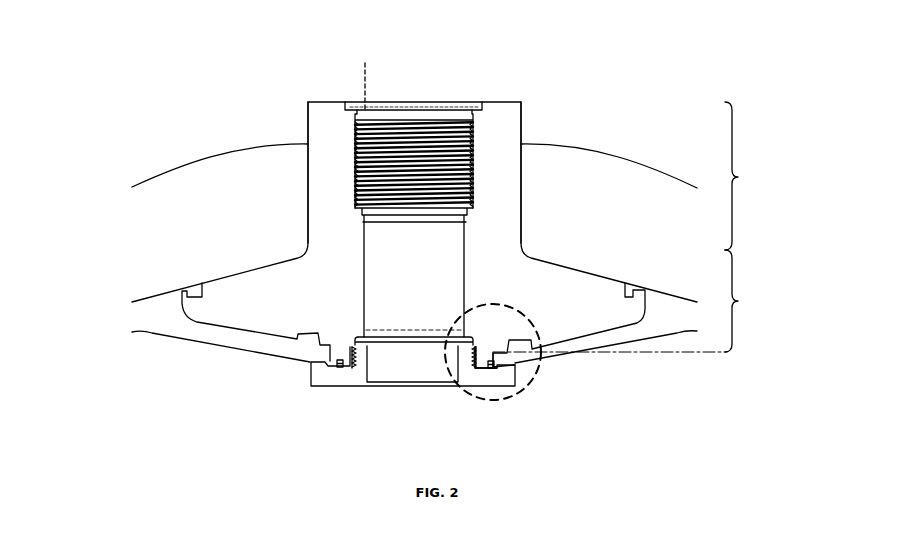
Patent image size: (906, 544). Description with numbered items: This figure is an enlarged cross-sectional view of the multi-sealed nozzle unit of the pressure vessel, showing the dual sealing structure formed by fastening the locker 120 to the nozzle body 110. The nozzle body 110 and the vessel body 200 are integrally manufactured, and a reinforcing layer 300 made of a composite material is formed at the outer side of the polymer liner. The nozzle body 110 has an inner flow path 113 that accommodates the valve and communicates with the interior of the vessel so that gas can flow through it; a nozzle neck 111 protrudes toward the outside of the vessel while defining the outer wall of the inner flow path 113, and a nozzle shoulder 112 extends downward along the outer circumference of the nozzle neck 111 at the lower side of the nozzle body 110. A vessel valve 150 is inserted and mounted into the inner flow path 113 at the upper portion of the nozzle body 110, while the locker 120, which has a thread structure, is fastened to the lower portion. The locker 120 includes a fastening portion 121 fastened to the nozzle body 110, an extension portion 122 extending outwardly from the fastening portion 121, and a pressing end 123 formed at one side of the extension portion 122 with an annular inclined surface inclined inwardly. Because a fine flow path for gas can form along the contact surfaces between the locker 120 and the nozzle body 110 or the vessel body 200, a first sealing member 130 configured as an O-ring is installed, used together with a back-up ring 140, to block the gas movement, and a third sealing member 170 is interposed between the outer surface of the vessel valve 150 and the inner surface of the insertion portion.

The nozzle body 110 is at (505, 108).
The nozzle neck 111 is at (539, 176).
The nozzle shoulder 112 is at (476, 308).
The inner flow path 113 is at (465, 258).
The locker 120 is at (342, 388).
The fastening portion 121 is at (483, 378).
The extension portion 122 is at (475, 373).
The pressing end 123 is at (517, 373).
The first sealing member 130 is at (489, 369).
The back-up ring 140 is at (505, 368).
The vessel valve 150 is at (363, 75).
The third sealing member 170 is at (383, 307).
The vessel body 200 is at (157, 292).
The reinforcing layer 300 is at (203, 173).